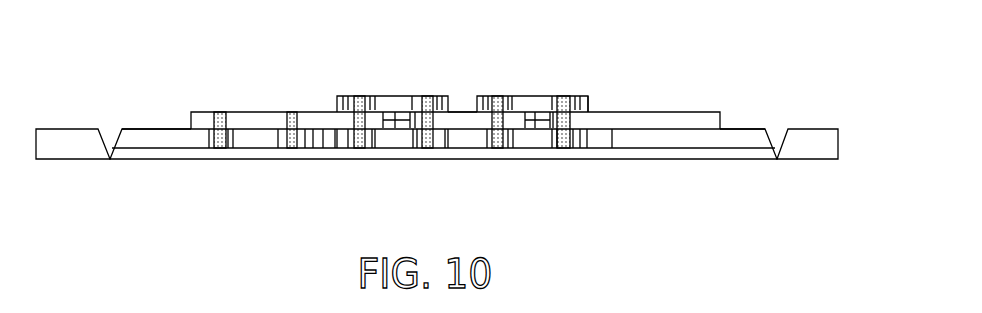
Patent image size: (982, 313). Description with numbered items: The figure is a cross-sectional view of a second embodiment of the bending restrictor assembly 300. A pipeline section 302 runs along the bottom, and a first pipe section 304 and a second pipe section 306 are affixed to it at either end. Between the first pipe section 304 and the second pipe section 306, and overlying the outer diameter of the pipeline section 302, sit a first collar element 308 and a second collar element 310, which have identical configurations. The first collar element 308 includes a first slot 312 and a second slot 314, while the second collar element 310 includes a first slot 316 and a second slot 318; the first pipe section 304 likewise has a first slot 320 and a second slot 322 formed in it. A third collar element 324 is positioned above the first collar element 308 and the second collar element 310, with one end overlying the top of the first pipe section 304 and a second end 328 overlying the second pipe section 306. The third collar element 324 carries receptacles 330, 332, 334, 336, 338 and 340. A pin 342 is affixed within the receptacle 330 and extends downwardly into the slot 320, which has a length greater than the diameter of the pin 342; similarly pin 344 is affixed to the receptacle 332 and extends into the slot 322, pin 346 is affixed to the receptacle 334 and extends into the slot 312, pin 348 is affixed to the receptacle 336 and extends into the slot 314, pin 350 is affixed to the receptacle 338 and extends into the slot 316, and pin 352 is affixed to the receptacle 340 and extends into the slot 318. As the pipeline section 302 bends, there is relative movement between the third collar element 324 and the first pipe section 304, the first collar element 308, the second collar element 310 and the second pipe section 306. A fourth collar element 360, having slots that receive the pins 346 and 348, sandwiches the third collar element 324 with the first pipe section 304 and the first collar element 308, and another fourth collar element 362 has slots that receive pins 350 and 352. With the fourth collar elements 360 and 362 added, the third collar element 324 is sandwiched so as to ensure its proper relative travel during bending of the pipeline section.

The bending restrictor assembly 300 is at (668, 87).
The pipeline section 302 is at (160, 158).
The first pipe section 304 is at (155, 127).
The second pipe section 306 is at (730, 130).
The first collar element 308 is at (393, 140).
The second collar element 310 is at (532, 140).
The first slot 312 is at (348, 150).
The second slot 314 is at (442, 152).
The first slot 316 is at (490, 150).
The second slot 318 is at (568, 149).
The first slot 320 is at (211, 150).
The second slot 322 is at (283, 150).
The third collar element 324 is at (469, 97).
The second end 328 is at (622, 113).
The receptacle 330 is at (241, 127).
The receptacle 332 is at (311, 112).
The receptacle 334 is at (387, 110).
The receptacle 336 is at (205, 113).
The receptacle 338 is at (520, 96).
The receptacle 340 is at (592, 110).
The pin 342 is at (223, 150).
The pin 344 is at (297, 150).
The pin 346 is at (365, 152).
The pin 348 is at (423, 152).
The pin 350 is at (500, 149).
The pin 352 is at (568, 97).
The fourth collar element 360 is at (405, 96).
The fourth collar element 362 is at (533, 96).